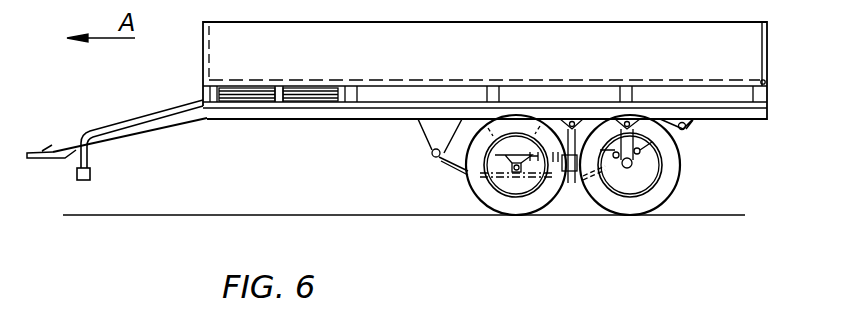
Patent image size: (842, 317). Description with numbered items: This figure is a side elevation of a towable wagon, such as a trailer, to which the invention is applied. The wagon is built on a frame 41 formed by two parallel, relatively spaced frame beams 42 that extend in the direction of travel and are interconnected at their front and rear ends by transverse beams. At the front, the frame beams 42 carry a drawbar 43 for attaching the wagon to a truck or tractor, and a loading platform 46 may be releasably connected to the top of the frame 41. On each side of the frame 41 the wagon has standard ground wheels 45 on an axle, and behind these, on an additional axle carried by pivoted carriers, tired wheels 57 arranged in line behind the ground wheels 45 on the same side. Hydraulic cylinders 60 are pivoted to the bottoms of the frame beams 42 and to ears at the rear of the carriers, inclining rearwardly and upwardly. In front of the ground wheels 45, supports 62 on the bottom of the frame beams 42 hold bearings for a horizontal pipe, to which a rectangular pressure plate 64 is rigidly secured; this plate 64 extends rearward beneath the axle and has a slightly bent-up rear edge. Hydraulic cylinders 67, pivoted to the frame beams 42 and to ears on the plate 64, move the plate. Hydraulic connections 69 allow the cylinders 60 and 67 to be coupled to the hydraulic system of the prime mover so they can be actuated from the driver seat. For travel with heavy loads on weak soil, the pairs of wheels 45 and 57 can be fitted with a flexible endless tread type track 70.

The loading platform 46 is at (378, 22).
The endless tread type track 70 is at (306, 87).
The frame 41 is at (378, 119).
The hydraulic cylinder 67 is at (590, 118).
The drawbar 43 is at (135, 137).
The hydraulic connection 69 is at (88, 156).
The frame beam 42 is at (215, 121).
The support 62 is at (424, 141).
The pressure plate 64 is at (445, 168).
The ground wheel 45 is at (538, 210).
The tired wheel 57 is at (602, 210).
The hydraulic cylinder 60 is at (684, 136).